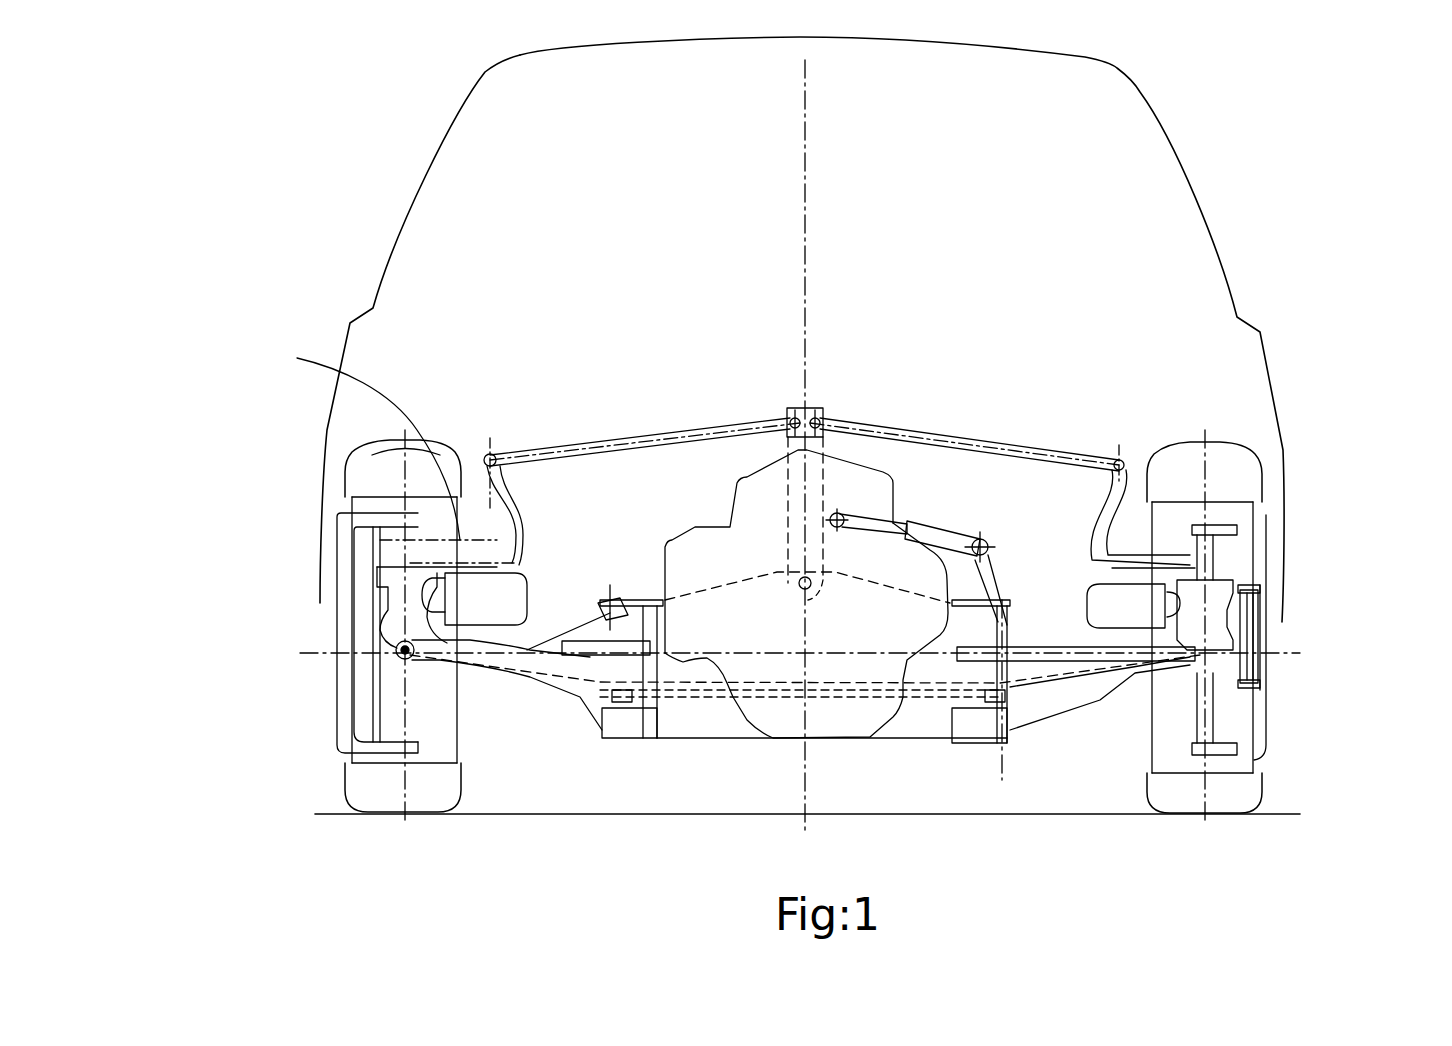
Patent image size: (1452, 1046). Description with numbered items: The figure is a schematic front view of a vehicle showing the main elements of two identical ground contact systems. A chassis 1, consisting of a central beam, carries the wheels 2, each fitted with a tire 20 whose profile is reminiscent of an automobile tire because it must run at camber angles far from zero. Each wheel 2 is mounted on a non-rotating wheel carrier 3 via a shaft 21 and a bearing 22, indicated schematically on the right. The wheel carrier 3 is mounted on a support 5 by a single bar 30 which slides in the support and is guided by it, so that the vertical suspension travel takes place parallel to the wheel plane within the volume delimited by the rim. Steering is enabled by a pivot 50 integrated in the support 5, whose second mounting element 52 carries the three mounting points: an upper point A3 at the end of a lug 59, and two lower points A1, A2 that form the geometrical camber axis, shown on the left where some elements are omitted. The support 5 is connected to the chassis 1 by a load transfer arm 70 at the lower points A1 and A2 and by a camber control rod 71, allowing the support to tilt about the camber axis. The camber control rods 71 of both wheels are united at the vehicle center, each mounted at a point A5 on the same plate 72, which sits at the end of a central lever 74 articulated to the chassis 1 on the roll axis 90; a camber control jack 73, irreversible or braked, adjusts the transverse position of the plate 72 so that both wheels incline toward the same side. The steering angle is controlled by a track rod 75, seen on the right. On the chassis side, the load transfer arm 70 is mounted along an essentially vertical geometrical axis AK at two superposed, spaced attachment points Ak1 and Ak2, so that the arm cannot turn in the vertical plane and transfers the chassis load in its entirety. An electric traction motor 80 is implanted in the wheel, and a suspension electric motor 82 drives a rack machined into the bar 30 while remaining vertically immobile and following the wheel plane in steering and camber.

The chassis 1 is at (922, 595).
The wheel 2 is at (345, 743).
The wheel carrier 3 is at (1243, 720).
The support 5 is at (1222, 585).
The tire 20 is at (372, 455).
The shaft 21 is at (1258, 655).
The bearing 22 is at (1245, 590).
The bar 30 is at (410, 528).
The pivot 50 is at (392, 576).
The second mounting element 52 is at (397, 605).
The lug 59 is at (505, 515).
The load transfer arm 70 is at (577, 698).
The camber control rod 71 is at (608, 440).
The plate 72 is at (820, 405).
The camber control jack 73 is at (905, 527).
The central lever 74 is at (800, 497).
The track rod 75 is at (1138, 663).
The electric traction motor 80 is at (357, 437).
The suspension electric motor 82 is at (487, 612).
The roll axis 90 is at (800, 592).
The lower mounting point A1 is at (287, 669).
The lower mounting point A2 is at (396, 649).
The upper mounting point A3 is at (490, 450).
The mounting point on plate A5 is at (790, 415).
The essentially vertical geometrical axis AK is at (1010, 677).
The attachment point Ak1 is at (633, 597).
The attachment point Ak2 is at (627, 728).